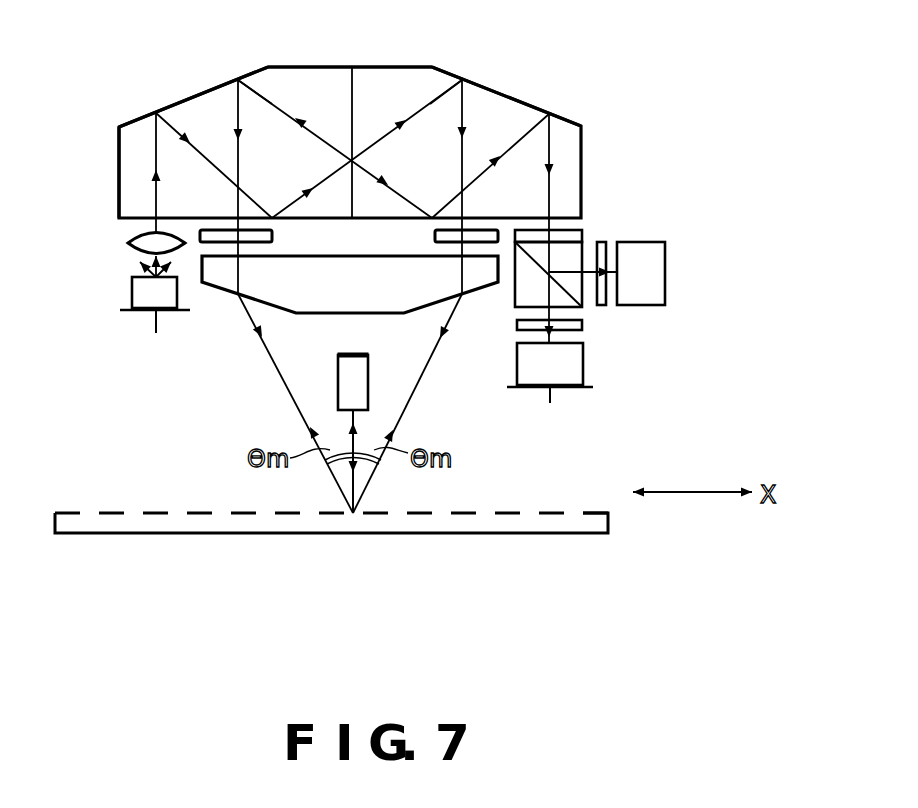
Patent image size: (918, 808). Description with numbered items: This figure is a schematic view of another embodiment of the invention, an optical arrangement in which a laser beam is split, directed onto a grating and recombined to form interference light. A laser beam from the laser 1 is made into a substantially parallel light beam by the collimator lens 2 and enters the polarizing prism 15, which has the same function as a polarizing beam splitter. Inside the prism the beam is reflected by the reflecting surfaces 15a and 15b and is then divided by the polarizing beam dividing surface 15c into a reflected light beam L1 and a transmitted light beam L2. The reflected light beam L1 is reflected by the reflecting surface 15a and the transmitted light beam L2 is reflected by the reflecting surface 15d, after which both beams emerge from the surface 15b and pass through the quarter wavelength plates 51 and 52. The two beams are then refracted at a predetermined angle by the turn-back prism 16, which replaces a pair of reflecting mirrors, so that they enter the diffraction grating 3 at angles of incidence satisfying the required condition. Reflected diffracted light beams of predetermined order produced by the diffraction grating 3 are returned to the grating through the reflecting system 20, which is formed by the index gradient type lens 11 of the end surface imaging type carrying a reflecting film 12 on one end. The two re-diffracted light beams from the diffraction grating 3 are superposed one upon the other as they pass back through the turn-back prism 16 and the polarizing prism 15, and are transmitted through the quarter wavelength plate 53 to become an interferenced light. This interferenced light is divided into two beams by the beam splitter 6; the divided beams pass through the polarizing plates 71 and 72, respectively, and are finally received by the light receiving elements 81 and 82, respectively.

The laser 1 is at (143, 293).
The collimator lens 2 is at (129, 243).
The diffraction grating 3 is at (587, 525).
The beam splitter 6 is at (530, 285).
The index gradient type lens 11 is at (355, 393).
The reflecting film 12 is at (362, 352).
The polarizing prism 15 is at (583, 134).
The reflecting surface 15a is at (197, 96).
The reflecting surface 15b is at (177, 217).
The polarizing beam dividing surface 15c is at (348, 82).
The reflecting surface 15d is at (520, 101).
The turn-back prism 16 is at (273, 285).
The reflecting system 20 is at (352, 415).
The quarter wavelength plate 51 is at (272, 236).
The quarter wavelength plate 52 is at (435, 237).
The quarter wavelength plate 53 is at (575, 235).
The polarizing plate 71 is at (577, 322).
The polarizing plate 72 is at (602, 243).
The light receiving element 81 is at (575, 370).
The light receiving element 82 is at (652, 257).
The reflected light beam L1 is at (270, 101).
The transmitted light beam L2 is at (437, 96).